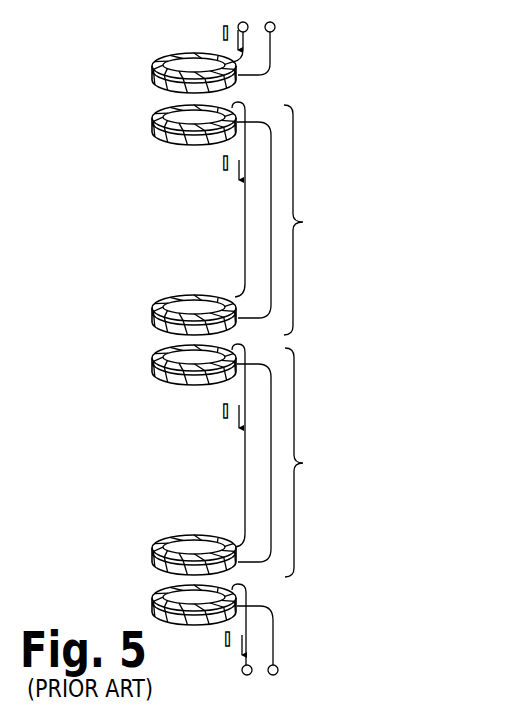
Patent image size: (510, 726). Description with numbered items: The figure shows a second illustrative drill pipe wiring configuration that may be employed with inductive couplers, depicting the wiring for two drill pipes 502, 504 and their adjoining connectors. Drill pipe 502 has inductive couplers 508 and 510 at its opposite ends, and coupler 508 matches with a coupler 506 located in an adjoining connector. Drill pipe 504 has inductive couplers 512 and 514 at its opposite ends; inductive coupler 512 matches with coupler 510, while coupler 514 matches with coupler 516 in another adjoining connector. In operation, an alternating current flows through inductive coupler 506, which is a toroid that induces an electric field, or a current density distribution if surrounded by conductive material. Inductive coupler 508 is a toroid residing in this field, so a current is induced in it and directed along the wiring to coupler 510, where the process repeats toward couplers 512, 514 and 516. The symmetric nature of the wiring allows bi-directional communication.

The drill pipe 502 is at (313, 220).
The drill pipe 504 is at (314, 462).
The inductive coupler 506 is at (153, 81).
The inductive coupler 508 is at (153, 131).
The inductive coupler 510 is at (154, 322).
The inductive coupler 512 is at (154, 372).
The inductive coupler 514 is at (154, 562).
The inductive coupler 516 is at (154, 612).